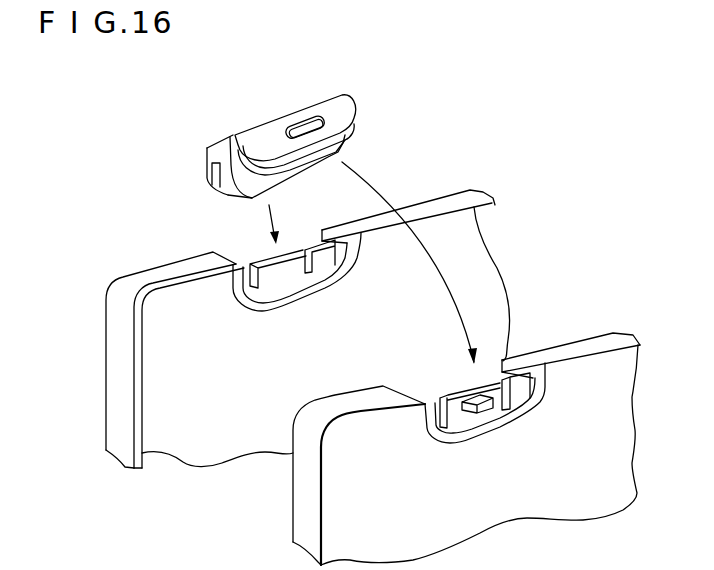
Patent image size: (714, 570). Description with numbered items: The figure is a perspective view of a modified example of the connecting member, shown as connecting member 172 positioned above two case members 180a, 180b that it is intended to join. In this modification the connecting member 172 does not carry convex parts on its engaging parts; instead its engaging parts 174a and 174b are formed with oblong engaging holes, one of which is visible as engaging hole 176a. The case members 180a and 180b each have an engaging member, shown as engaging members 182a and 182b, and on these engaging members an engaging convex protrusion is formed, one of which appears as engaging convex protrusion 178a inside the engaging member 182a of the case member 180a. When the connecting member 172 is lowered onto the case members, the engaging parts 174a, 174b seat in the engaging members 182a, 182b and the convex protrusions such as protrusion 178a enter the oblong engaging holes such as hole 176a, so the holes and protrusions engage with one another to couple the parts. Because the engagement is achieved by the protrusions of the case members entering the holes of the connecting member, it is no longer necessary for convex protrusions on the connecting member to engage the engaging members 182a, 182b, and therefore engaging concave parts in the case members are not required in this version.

The connecting member 172 is at (358, 105).
The engaging part 174a is at (347, 130).
The engaging part 174b is at (206, 176).
The engaging hole 176a is at (315, 122).
The engaging convex protrusion 178a is at (479, 393).
The case member 180a is at (312, 505).
The case member 180b is at (118, 392).
The engaging member 182a is at (541, 385).
The engaging member 182b is at (237, 263).